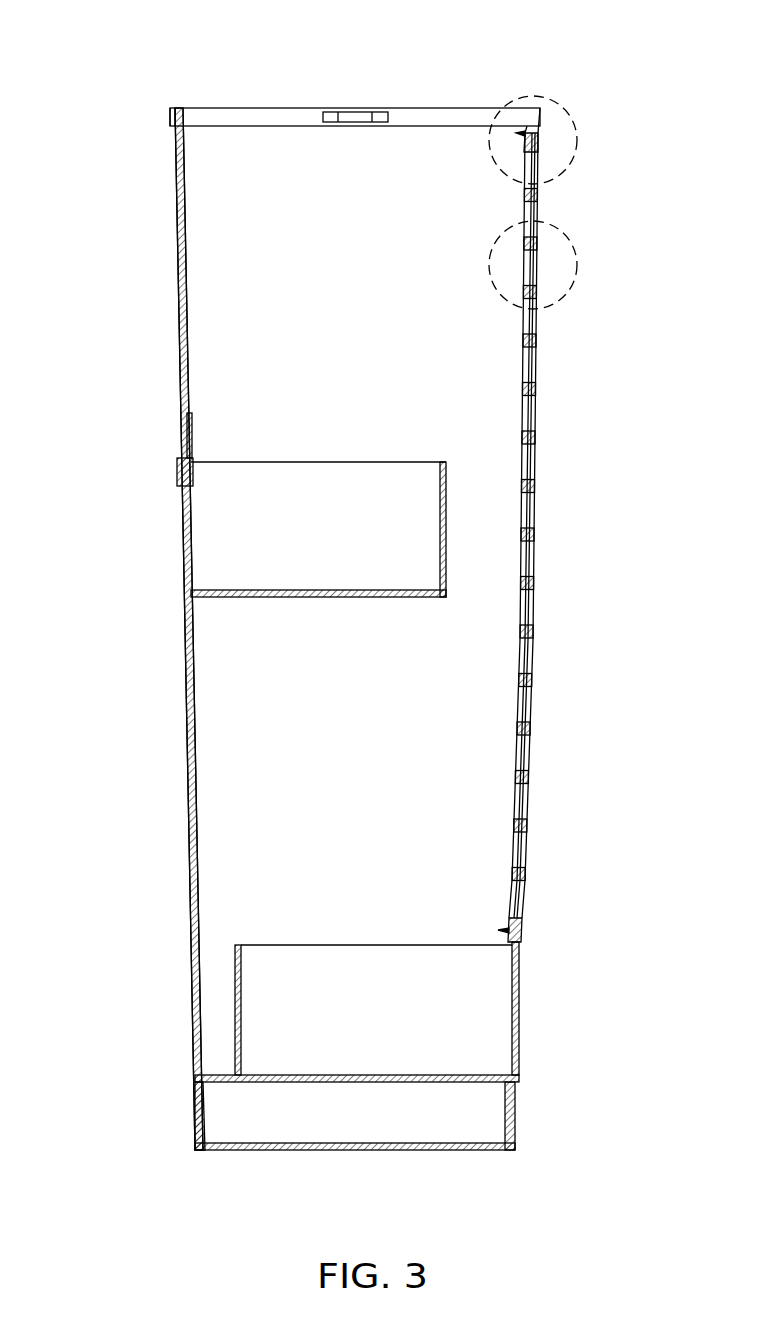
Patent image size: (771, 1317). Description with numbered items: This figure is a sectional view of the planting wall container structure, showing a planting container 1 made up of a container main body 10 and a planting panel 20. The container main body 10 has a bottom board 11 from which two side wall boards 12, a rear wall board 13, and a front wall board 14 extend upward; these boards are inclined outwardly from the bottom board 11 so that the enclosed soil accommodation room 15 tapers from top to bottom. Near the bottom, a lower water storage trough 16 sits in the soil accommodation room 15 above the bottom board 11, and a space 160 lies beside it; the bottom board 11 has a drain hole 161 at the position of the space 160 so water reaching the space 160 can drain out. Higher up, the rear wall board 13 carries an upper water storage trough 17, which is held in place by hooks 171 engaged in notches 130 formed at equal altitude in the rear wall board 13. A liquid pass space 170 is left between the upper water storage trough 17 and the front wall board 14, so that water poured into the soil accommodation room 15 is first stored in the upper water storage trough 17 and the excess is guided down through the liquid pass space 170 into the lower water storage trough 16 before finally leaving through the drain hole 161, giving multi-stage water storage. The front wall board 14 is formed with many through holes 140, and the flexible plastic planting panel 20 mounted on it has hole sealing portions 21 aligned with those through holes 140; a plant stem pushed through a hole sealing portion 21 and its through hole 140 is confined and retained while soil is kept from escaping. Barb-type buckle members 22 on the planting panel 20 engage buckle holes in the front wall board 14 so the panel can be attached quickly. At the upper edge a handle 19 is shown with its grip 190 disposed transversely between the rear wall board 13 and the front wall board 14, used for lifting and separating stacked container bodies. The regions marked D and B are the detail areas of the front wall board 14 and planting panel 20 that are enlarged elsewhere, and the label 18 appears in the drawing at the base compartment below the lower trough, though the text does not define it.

The planting container 1 is at (570, 458).
The container main body 10 is at (180, 265).
The bottom board 11 is at (282, 1080).
The side wall boards 12 is at (288, 155).
The rear wall board 13 is at (182, 325).
The front wall board 14 is at (519, 985).
The soil accommodation room 15 is at (404, 170).
The lower water storage trough 16 is at (480, 1050).
The upper water storage trough 17 is at (226, 553).
The base compartment 18 is at (515, 1122).
The handles 19 is at (172, 121).
The planting panel 20 is at (538, 545).
The hole sealing portions 21 is at (540, 272).
The barb-type buckle members 22 is at (526, 133).
The notches 130 is at (183, 450).
The through holes 140 is at (528, 286).
The space 160 is at (210, 985).
The drain hole 161 is at (200, 1090).
The liquid pass space 170 is at (475, 657).
The hooks 171 is at (178, 486).
The grip 190 is at (218, 118).
The detail D is at (570, 118).
The detail B is at (570, 243).